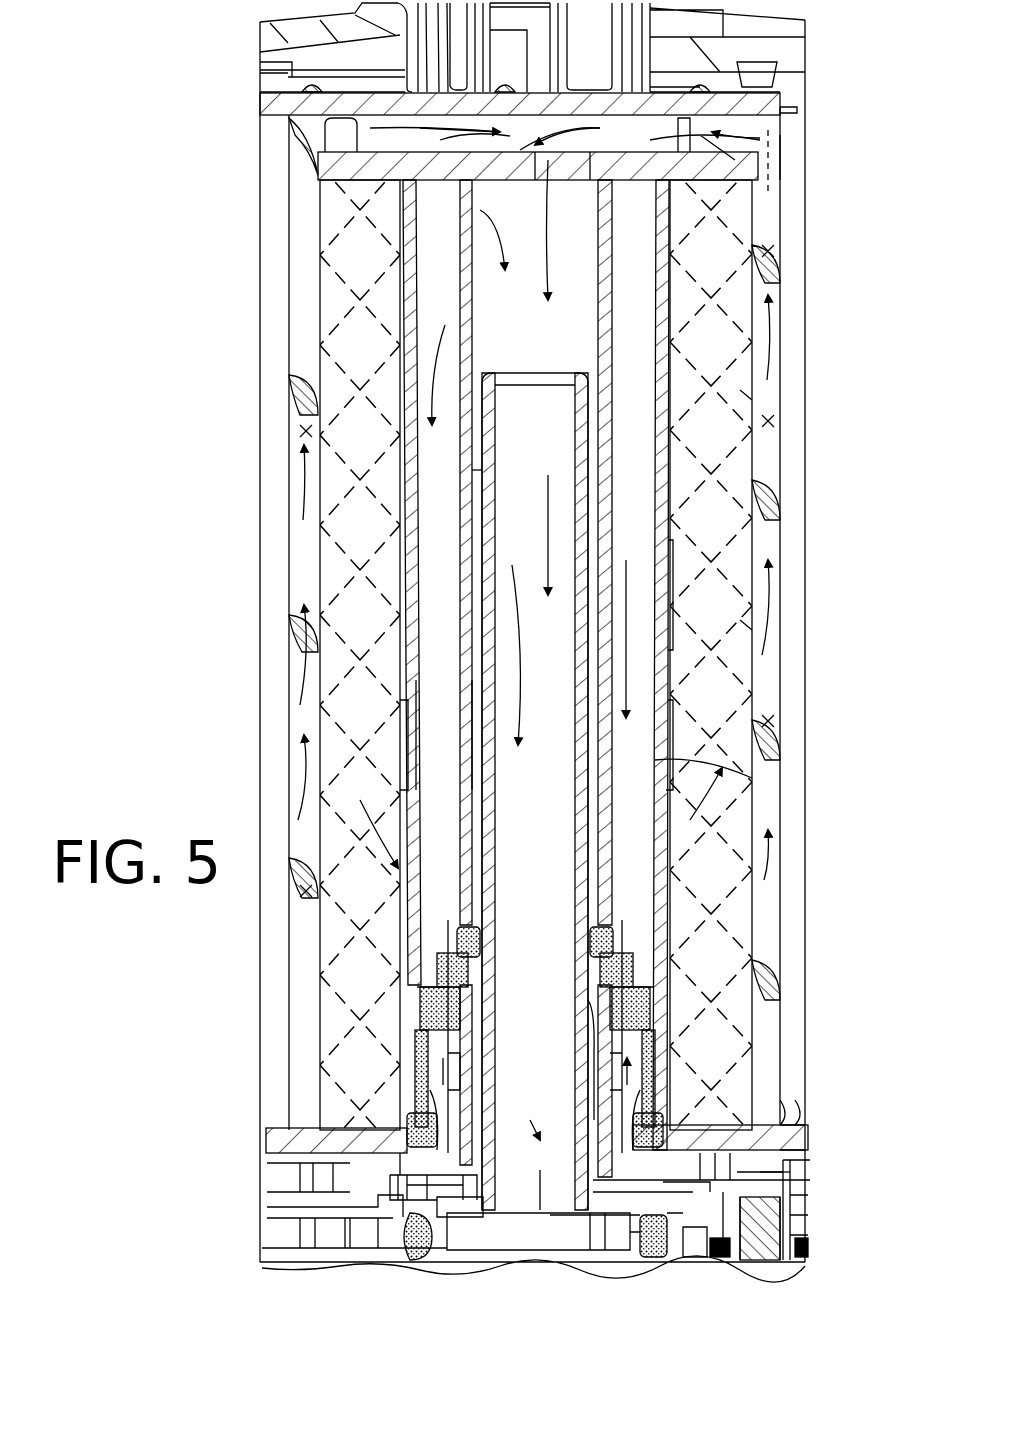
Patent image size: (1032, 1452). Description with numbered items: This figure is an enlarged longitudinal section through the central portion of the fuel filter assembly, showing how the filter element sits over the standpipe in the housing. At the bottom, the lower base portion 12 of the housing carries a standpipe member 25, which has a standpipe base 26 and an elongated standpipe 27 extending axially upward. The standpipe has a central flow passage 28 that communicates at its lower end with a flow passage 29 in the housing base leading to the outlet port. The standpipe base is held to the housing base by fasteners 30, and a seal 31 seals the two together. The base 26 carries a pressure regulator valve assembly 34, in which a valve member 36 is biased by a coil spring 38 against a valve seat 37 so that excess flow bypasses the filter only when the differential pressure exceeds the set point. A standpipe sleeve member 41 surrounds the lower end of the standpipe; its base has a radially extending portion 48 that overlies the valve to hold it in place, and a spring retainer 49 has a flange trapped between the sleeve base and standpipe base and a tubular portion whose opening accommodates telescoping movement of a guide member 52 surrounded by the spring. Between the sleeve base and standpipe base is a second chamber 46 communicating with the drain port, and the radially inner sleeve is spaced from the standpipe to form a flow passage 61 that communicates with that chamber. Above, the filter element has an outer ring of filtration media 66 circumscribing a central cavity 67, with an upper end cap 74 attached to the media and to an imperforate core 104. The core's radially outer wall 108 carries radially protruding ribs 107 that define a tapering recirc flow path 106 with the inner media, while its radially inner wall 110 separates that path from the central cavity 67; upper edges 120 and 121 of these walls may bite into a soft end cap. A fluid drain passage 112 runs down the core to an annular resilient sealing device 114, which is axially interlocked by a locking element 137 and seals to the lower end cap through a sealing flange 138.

The lower base portion 12 is at (283, 1262).
The standpipe member 25 is at (480, 490).
The standpipe base 26 is at (400, 1180).
The standpipe 27 is at (480, 630).
The central flow passage 28 is at (535, 1140).
The flow passage 29 is at (468, 1233).
The fasteners 30 is at (325, 1130).
The seal 31 is at (413, 1267).
The pressure regulator valve assembly 34 is at (760, 1267).
The valve member 36 is at (795, 1207).
The valve seat 37 is at (812, 1248).
The coil spring 38 is at (778, 1260).
The standpipe sleeve member 41 is at (790, 1150).
The second chamber 46 is at (697, 1190).
The radially extending portion 48 is at (807, 1143).
The spring retainer 49 is at (810, 1178).
The guide member 52 is at (750, 1257).
The flow passage 61 is at (588, 1047).
The outer ring of filtration media 66 is at (730, 555).
The central cavity 67 is at (470, 226).
The upper end cap 74 is at (770, 156).
The imperforate core 104 is at (408, 735).
The recirc flow path 106 is at (665, 710).
The radially protruding ribs 107 is at (670, 770).
The radially outer wall 108 is at (665, 472).
The radially inner wall 110 is at (465, 350).
The fluid drain passage 112 is at (440, 290).
The annular resilient sealing device 114 is at (410, 1035).
The upper edge 120 is at (318, 170).
The upper edge 121 is at (600, 165).
The locking element 137 is at (430, 998).
The sealing flange 138 is at (400, 1080).